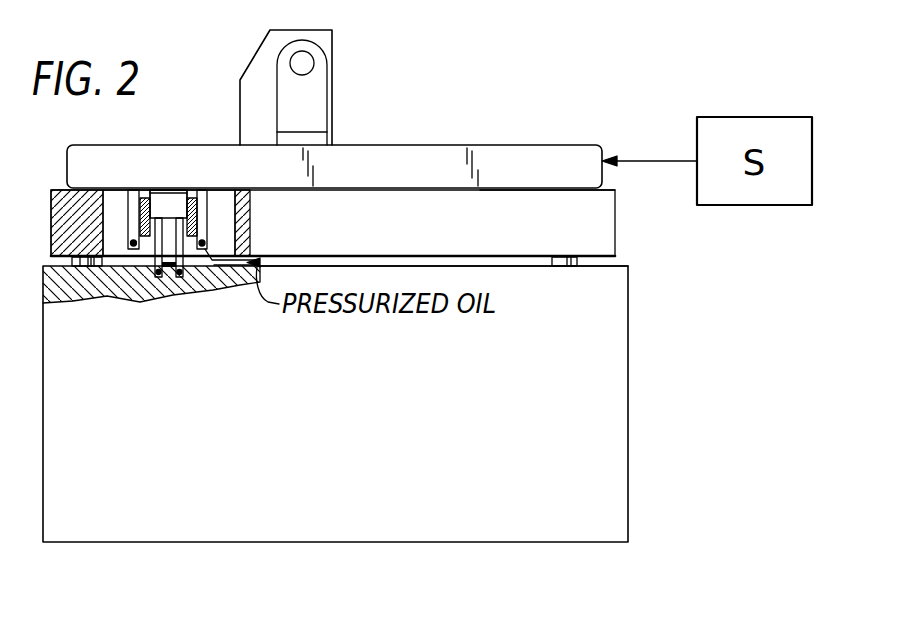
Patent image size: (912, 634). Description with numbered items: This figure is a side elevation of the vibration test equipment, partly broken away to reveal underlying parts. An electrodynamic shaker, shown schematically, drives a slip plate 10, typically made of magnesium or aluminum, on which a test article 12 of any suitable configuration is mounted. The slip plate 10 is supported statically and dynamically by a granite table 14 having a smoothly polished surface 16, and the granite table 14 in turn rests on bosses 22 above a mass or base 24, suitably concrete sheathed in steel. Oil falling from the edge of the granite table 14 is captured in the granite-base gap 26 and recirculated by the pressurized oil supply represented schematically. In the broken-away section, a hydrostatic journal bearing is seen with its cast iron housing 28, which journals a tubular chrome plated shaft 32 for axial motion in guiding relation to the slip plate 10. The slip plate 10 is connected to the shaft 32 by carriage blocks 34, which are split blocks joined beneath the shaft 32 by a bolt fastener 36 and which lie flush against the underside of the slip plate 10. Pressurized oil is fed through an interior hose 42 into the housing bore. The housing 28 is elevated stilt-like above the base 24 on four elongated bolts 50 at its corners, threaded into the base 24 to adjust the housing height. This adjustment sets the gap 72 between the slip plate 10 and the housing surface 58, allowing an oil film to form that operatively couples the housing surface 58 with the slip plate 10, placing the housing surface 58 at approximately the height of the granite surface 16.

The slip plate 10 is at (502, 153).
The test article 12 is at (334, 73).
The granite table 14 is at (483, 240).
The polished surface 16 is at (516, 183).
The bosses 22 is at (569, 267).
The base 24 is at (404, 440).
The granite-base gap 26 is at (411, 266).
The housing 28 is at (165, 210).
The shaft 32 is at (198, 214).
The carriage blocks 34 is at (126, 218).
The bolt fastener 36 is at (137, 249).
The interior hose 42 is at (204, 297).
The elongated bolts 50 is at (158, 278).
The housing surface 58 is at (172, 192).
The gap 72 is at (157, 192).